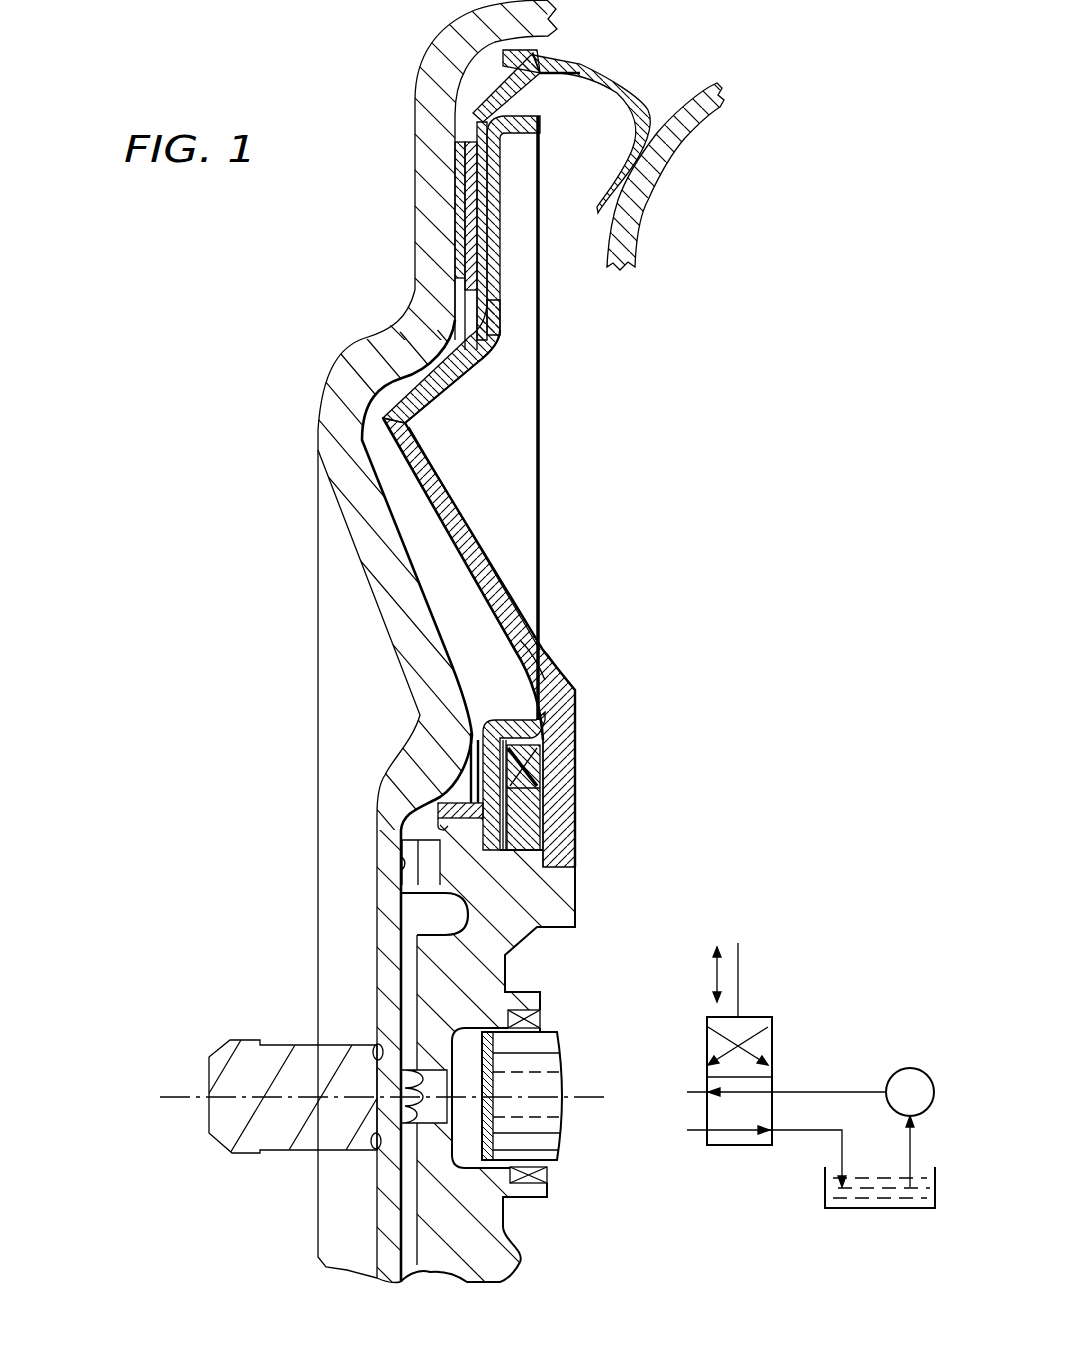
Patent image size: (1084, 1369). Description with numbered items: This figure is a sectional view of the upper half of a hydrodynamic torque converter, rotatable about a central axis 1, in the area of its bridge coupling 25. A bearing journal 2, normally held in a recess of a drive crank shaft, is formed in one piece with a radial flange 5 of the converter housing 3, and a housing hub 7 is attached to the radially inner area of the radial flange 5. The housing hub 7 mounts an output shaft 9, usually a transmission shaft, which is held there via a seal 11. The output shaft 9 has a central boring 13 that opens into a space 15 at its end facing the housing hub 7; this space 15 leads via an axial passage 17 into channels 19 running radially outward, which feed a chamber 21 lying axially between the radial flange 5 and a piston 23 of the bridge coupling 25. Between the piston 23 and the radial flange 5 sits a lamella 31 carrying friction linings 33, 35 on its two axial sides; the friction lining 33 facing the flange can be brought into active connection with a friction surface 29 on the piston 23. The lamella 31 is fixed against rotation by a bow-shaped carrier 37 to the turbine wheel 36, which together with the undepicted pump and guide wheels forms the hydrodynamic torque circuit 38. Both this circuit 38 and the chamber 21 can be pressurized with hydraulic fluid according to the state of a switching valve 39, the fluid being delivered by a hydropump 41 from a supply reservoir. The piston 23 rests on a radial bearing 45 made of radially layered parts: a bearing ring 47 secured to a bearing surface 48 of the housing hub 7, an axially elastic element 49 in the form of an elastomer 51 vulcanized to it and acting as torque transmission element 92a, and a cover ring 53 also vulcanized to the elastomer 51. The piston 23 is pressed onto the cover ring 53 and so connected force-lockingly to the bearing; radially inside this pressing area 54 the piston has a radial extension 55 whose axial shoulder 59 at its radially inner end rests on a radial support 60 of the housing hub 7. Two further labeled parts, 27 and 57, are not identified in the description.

The central axis 1 is at (193, 1087).
The bearing journal 2 is at (267, 1045).
The converter housing 3 is at (377, 887).
The radial flange 5 is at (413, 652).
The housing hub 7 is at (477, 877).
The output shaft 9 is at (547, 1043).
The seal 11 is at (547, 1177).
The central boring 13 is at (550, 1110).
The space 15 is at (467, 1082).
The axial passage 17 is at (438, 1073).
The channels 19 is at (410, 955).
The chamber 21 is at (458, 587).
The piston 23 is at (450, 522).
The bridge coupling 25 is at (398, 487).
The friction lining 27 is at (475, 240).
The friction surface 29 is at (468, 193).
The lamella 31 is at (473, 212).
The friction lining 33 is at (458, 177).
The friction lining 35 is at (415, 107).
The turbine wheel 36 is at (693, 137).
The bow-shaped carrier 37 is at (570, 57).
The hydrodynamic torque circuit 38 is at (480, 459).
The switching valve 39 is at (770, 1027).
The hydropump 41 is at (923, 1097).
The radial bearing 45 is at (533, 800).
The bearing ring 47 is at (537, 822).
The bearing surface 48 is at (547, 880).
The axially elastic element 49 is at (543, 773).
The elastomer 51 is at (547, 750).
The cover ring 53 is at (557, 698).
The pressing area 54 is at (527, 628).
The radial extension 55 is at (473, 738).
The ring 57 is at (540, 792).
The axial shoulder 59 is at (440, 817).
The radial support 60 is at (440, 823).
The torque transmission element 92a is at (540, 758).